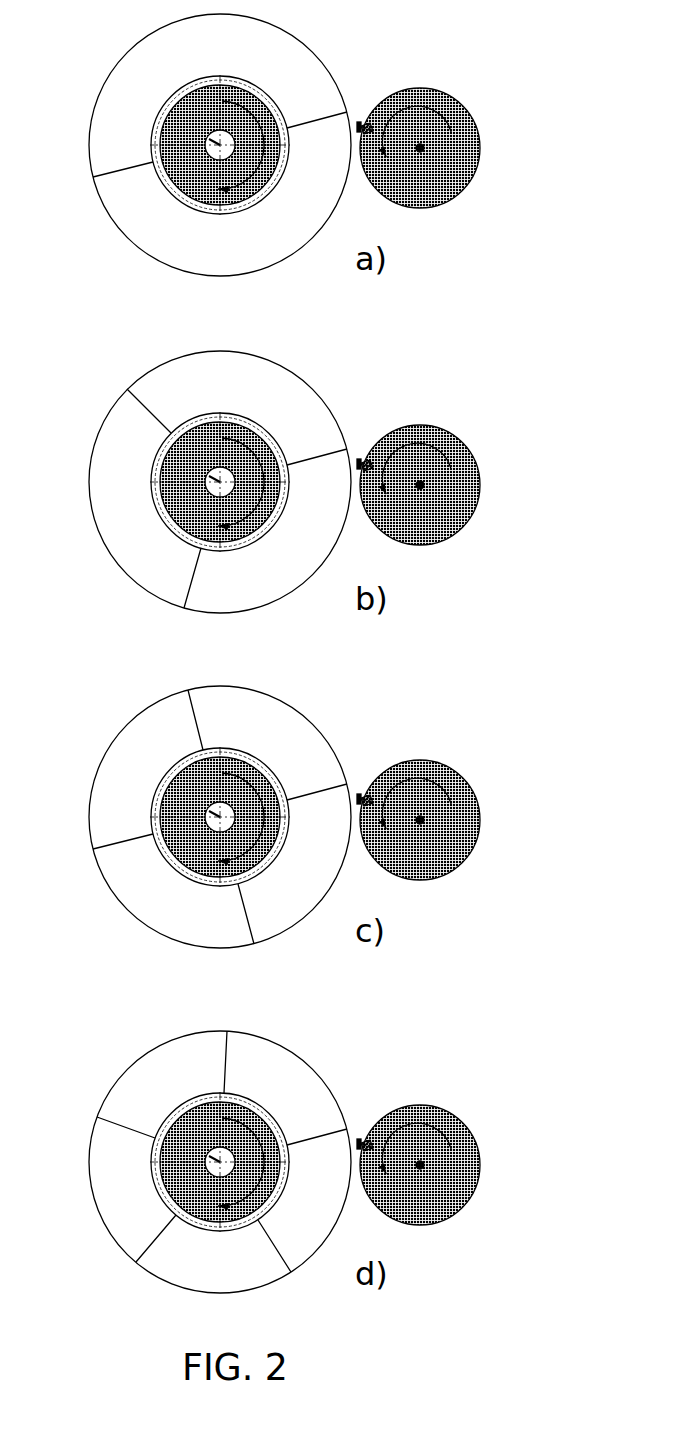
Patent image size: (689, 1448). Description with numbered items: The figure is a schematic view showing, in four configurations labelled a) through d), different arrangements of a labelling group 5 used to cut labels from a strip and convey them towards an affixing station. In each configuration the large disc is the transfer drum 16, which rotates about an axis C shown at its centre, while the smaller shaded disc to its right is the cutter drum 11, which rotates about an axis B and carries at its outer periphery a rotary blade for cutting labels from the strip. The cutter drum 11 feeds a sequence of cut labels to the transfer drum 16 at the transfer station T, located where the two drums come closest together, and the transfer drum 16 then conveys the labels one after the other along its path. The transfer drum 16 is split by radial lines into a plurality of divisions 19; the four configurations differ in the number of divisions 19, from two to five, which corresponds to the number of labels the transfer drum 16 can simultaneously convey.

The labelling group 5 is at (440, 74).
The cutter drum 11 is at (440, 176).
The transfer drum 16 is at (189, 265).
The divisions 19 is at (276, 57).
The axis C is at (220, 145).
The transfer station T is at (354, 136).
The axis B is at (420, 152).